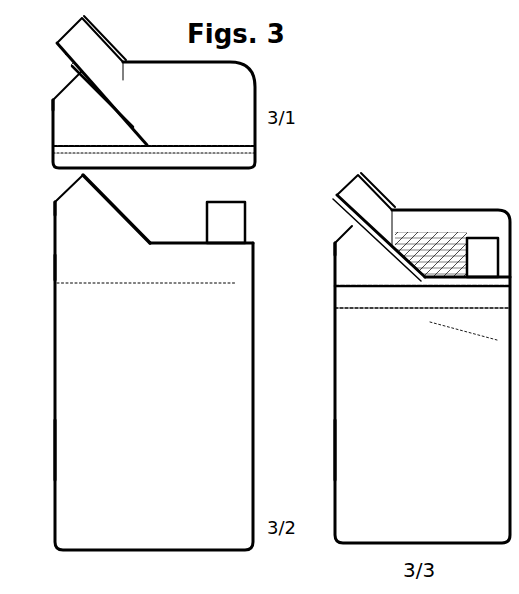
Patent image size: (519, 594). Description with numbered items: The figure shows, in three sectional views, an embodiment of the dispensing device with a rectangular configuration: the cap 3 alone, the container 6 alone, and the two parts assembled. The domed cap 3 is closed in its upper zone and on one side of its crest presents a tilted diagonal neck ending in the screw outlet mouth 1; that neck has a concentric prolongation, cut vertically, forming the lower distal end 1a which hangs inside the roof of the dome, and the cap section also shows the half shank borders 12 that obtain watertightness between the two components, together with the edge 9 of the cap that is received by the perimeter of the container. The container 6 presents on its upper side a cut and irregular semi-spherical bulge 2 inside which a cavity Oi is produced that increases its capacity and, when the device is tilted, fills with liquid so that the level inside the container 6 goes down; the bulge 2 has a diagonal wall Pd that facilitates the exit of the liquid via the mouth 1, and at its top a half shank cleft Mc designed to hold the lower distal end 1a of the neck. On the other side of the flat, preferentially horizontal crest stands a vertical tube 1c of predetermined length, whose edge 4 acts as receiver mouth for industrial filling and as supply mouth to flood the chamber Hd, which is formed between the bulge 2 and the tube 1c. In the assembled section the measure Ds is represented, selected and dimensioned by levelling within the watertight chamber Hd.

The screw outlet mouth 1 is at (60, 42).
The lower distal end of the neck 1a is at (143, 62).
The tube 1c is at (207, 202).
The semi-spherical bulge 2 is at (57, 80).
The cap 3 is at (258, 92).
The edge of the tube 4 is at (247, 203).
The container 6 is at (155, 348).
The base space edge 9 is at (257, 169).
The half shank borders 12 is at (53, 147).
The cavity Oi is at (67, 99).
The diagonal wall Pd is at (122, 233).
The half shank cleft Mc is at (118, 212).
The chamber Hd is at (173, 240).
The measure Ds is at (418, 236).